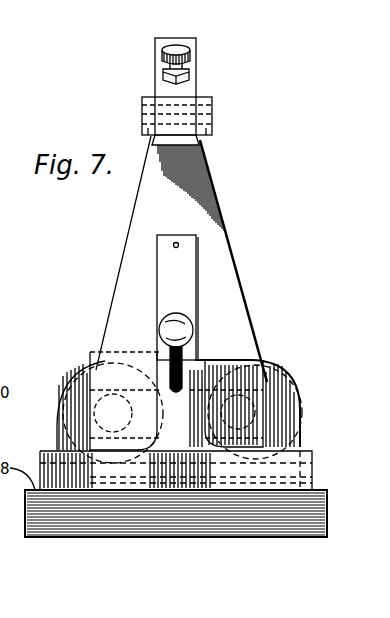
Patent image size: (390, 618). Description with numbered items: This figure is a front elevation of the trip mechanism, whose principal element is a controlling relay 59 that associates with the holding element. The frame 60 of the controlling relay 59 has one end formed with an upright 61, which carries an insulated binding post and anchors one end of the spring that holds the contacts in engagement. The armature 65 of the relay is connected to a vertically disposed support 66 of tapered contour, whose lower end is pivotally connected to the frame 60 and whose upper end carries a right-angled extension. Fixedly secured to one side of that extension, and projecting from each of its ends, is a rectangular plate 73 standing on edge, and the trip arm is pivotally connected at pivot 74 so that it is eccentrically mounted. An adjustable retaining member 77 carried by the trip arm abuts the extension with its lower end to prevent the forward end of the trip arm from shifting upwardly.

The adjustable retaining member 77 is at (192, 50).
The rectangular plate 73 is at (212, 107).
The pivot 74 is at (150, 133).
The upright 61 is at (185, 262).
The vertically disposed support 66 is at (229, 313).
The armature 65 is at (100, 360).
The frame 60 is at (282, 370).
The controlling relay 59 is at (318, 409).